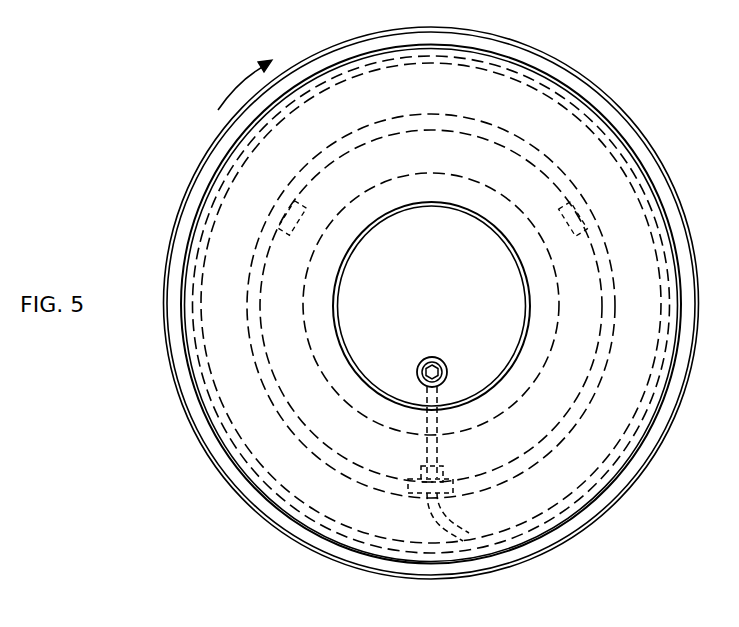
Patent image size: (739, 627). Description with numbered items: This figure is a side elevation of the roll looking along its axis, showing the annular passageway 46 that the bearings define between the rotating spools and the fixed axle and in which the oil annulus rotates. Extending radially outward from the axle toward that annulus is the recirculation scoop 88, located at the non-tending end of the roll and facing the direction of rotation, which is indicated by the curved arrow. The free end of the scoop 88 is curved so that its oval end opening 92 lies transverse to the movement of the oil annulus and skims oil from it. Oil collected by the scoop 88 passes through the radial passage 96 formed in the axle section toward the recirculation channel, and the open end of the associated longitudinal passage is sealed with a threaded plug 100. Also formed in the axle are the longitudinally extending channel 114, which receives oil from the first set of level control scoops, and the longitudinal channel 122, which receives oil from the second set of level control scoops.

The annular passageway 46 is at (555, 118).
The longitudinally extending channel 114 is at (302, 204).
The longitudinal channel 122 is at (562, 205).
The threaded plug 100 is at (439, 362).
The radial passage 96 is at (426, 419).
The scoop 88 is at (421, 510).
The oval end opening 92 is at (466, 537).